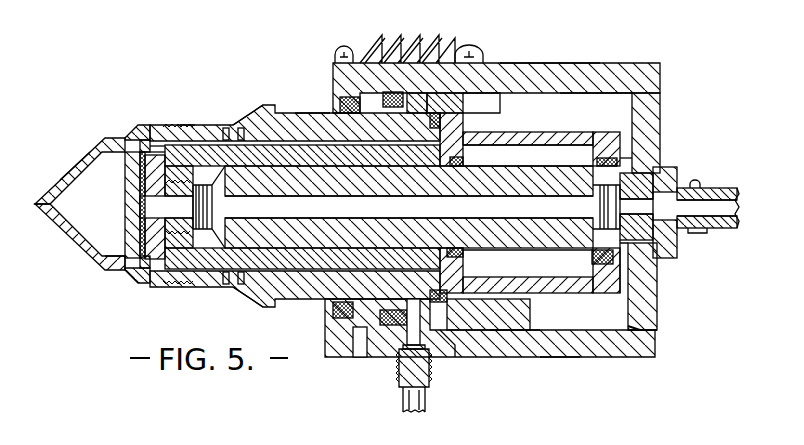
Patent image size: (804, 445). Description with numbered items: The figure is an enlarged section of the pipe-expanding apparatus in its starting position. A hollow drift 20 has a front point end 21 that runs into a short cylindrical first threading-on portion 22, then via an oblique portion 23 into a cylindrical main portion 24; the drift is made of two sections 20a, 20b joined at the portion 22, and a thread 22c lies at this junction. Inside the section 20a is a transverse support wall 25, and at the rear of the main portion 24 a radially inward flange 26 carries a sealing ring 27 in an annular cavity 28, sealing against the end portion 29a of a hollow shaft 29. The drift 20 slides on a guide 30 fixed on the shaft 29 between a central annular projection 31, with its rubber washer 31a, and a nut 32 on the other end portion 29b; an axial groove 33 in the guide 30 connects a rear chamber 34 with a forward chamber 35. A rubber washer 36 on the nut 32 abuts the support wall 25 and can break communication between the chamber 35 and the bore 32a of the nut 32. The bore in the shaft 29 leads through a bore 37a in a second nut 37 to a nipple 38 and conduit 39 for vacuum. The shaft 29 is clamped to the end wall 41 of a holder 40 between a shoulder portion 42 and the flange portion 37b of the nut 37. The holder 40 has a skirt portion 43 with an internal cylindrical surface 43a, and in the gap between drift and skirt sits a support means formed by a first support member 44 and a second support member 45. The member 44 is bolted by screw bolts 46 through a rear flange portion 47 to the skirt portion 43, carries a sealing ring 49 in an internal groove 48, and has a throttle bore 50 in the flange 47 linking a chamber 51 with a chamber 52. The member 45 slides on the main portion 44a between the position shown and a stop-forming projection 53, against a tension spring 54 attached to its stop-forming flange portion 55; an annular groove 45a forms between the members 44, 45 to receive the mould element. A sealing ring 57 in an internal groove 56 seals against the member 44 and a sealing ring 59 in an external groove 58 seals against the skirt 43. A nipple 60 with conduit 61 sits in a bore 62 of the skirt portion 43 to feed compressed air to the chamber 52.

The drift 20 is at (268, 300).
The drift section 20a is at (90, 153).
The drift section 20b is at (204, 125).
The front point end 21 is at (76, 172).
The first threading-on portion 22 is at (118, 137).
The nut thread 22c is at (180, 124).
The oblique portion 23 is at (145, 146).
The main portion 24 is at (186, 124).
The support wall 25 is at (128, 205).
The flange 26 is at (610, 156).
The sealing ring 27 is at (622, 160).
The annular cavity 28 is at (636, 174).
The hollow shaft 29 is at (514, 188).
The end portion of shaft 29a is at (541, 207).
The other end portion of shaft 29b is at (182, 246).
The guide 30 is at (149, 148).
The central annular projection 31 is at (455, 130).
The rubber washer 31a is at (470, 150).
The nut 32 is at (150, 268).
The bore of nut 32a is at (152, 210).
The axially extending groove 33 is at (316, 139).
The rear chamber 34 is at (496, 164).
The forward chamber 35 is at (143, 152).
The rubber washer 36 is at (122, 264).
The second nut 37 is at (666, 250).
The bore 37a is at (700, 195).
The flange portion 37b is at (668, 260).
The nipple 38 is at (684, 231).
The conduit 39 is at (738, 234).
The holder 40 is at (644, 309).
The end wall 41 is at (654, 326).
The shoulder portion 42 is at (644, 273).
The skirt portion 43 is at (566, 80).
The internal cylindrical surface 43a is at (558, 328).
The first support member 44 is at (288, 300).
The main portion 44a is at (333, 108).
The second support member 45 is at (370, 314).
The annular groove 45a is at (256, 103).
The screw bolts 46 is at (454, 344).
The rear flange portion 47 is at (521, 84).
The internal groove 48 is at (462, 304).
The sealing ring 49 is at (448, 296).
The throttle bore 50 is at (475, 100).
The chamber 51 is at (590, 100).
The chamber 52 is at (442, 95).
The stop-forming projection 53 is at (340, 104).
The tension spring 54 is at (377, 46).
The stop-forming flange portion 55 is at (341, 50).
The internal annular groove 56 is at (352, 318).
The sealing ring 57 is at (362, 308).
The external annular groove 58 is at (418, 95).
The sealing ring 59 is at (393, 92).
The nipple 60 is at (428, 380).
The conduit 61 is at (427, 405).
The bore 62 is at (404, 336).